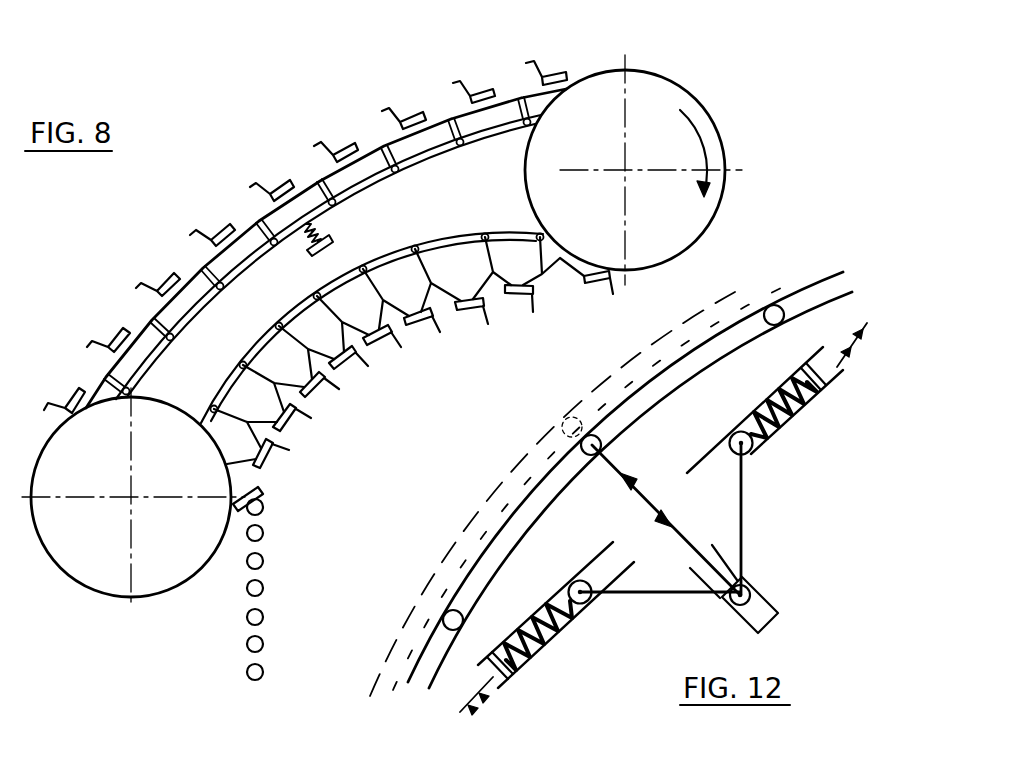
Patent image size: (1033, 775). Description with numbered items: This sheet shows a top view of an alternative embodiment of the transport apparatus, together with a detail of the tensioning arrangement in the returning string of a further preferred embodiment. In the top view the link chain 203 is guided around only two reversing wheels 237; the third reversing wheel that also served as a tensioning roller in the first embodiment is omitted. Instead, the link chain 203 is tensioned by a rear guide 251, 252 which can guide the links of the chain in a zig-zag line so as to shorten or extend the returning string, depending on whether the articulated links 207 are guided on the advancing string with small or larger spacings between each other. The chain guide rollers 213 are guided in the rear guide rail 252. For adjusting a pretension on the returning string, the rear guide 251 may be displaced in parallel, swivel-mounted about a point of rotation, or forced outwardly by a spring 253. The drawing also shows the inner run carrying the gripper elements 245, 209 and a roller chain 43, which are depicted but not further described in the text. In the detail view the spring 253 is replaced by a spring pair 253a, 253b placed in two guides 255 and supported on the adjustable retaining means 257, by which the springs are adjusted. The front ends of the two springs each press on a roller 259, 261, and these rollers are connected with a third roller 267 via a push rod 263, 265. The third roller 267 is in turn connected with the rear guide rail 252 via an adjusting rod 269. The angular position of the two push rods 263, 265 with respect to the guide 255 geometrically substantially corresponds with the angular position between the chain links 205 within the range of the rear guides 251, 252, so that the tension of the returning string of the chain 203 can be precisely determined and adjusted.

In FIG. 8, the link chain 203 is at (303, 162).
In FIG. 8, the reversing wheel 237 is at (663, 87).
In FIG. 8, the rear guide rail 252 is at (195, 282).
In FIG. 12, the rear guide rail 252 is at (632, 425).
In FIG. 8, the spring 253 is at (290, 233).
In FIG. 8, the rear guide 251 is at (122, 317).
In FIG. 8, the chain guide roller 213 is at (98, 378).
In FIG. 8, the inner chain 245 is at (383, 320).
In FIG. 8, the gripper pad 209 is at (395, 440).
In FIG. 8, the chain link 205 is at (287, 402).
In FIG. 8, the articulated link 207 is at (270, 433).
In FIG. 8, the roller chain 43 is at (263, 588).
In FIG. 12, the guide 255 is at (724, 450).
In FIG. 12, the spring 253a is at (552, 640).
In FIG. 12, the spring 253b is at (795, 417).
In FIG. 12, the adjustable retaining means 257 is at (832, 390).
In FIG. 12, the roller 261 is at (712, 462).
In FIG. 12, the roller 259 is at (592, 573).
In FIG. 12, the third roller 267 is at (753, 587).
In FIG. 12, the push rod 265 is at (742, 507).
In FIG. 12, the push rod 263 is at (657, 600).
In FIG. 12, the adjusting rod 269 is at (655, 517).